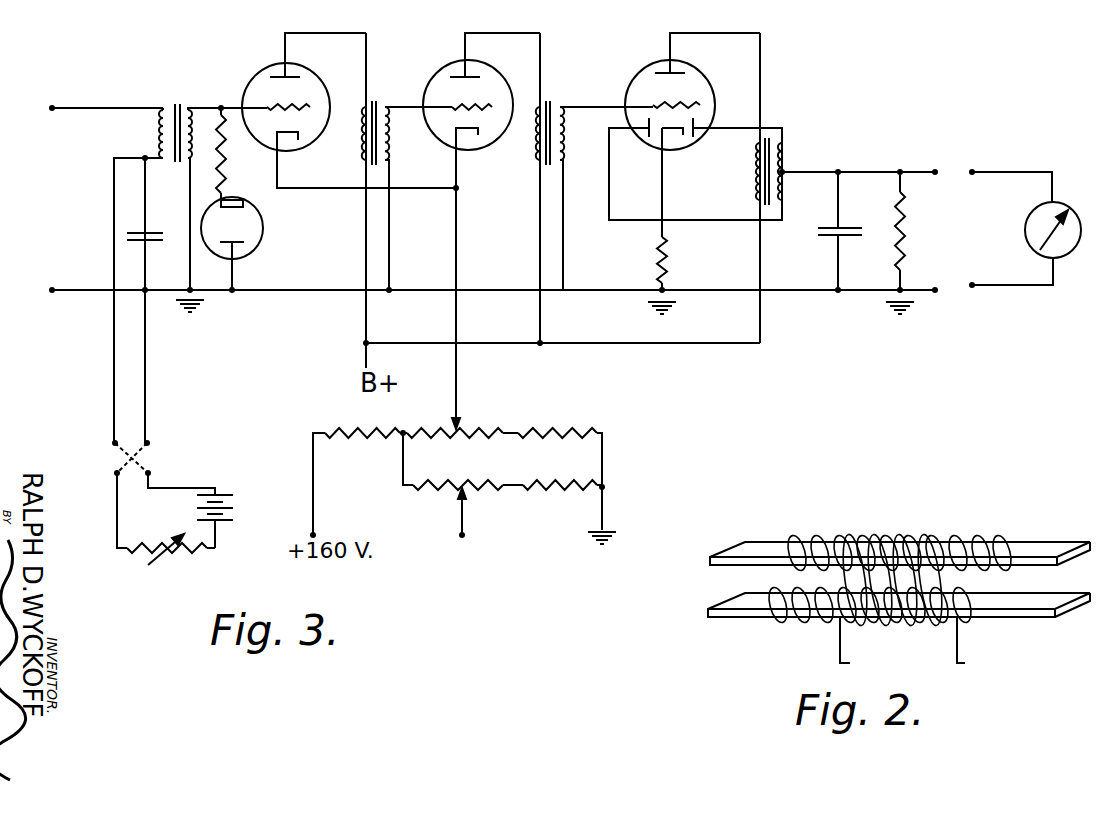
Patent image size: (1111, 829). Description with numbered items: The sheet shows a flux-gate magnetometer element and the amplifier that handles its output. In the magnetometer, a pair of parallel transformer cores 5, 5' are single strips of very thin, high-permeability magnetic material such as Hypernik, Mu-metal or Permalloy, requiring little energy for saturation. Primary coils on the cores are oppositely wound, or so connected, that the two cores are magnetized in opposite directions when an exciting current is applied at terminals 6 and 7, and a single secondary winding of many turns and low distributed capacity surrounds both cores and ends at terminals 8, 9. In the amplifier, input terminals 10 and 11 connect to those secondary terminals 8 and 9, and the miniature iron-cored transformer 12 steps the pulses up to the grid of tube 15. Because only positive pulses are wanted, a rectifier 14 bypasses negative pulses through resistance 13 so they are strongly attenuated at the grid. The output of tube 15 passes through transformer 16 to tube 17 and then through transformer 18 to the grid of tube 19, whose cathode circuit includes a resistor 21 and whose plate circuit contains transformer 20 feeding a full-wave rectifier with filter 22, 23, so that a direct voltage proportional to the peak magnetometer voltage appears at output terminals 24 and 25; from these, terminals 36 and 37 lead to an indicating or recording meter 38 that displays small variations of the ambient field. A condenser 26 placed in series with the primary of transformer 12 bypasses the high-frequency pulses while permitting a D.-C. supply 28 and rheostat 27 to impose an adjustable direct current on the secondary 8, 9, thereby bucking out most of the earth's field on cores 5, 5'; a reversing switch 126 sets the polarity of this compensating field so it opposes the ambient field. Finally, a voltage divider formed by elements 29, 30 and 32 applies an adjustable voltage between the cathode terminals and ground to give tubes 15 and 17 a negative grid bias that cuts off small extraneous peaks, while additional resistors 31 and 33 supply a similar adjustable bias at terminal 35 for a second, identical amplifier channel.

In FIG. 2, the transformer core 5 is at (900, 537).
In FIG. 2, the transformer core 5' is at (899, 619).
In FIG. 2, the primary terminal 6 is at (797, 557).
In FIG. 2, the primary terminal 7 is at (767, 617).
In FIG. 2, the secondary terminal 8 is at (868, 606).
In FIG. 2, the secondary terminal 9 is at (934, 606).
In FIG. 3, the input terminal 10 is at (89, 109).
In FIG. 3, the input terminal 11 is at (476, 299).
In FIG. 3, the input transformer 12 is at (177, 105).
In FIG. 3, the resistance 13 is at (228, 145).
In FIG. 3, the rectifier 14 is at (262, 237).
In FIG. 3, the tube 15 is at (313, 145).
In FIG. 3, the transformer 16 is at (374, 106).
In FIG. 3, the tube 17 is at (492, 143).
In FIG. 3, the transformer 18 is at (548, 106).
In FIG. 3, the tube 19 is at (700, 138).
In FIG. 3, the transformer 20 is at (768, 133).
In FIG. 3, the cathode resistor 21 is at (672, 265).
In FIG. 3, the filter 22 is at (820, 232).
In FIG. 3, the filter 23 is at (905, 230).
In FIG. 3, the output terminal 24 is at (942, 162).
In FIG. 3, the output terminal 25 is at (942, 280).
In FIG. 3, the condenser 26 is at (162, 236).
In FIG. 3, the rheostat 27 is at (172, 567).
In FIG. 3, the D.-C. supply 28 is at (235, 500).
In FIG. 3, the voltage divider element 29 is at (372, 440).
In FIG. 3, the voltage divider element 30 is at (476, 440).
In FIG. 3, the resistor 31 is at (443, 491).
In FIG. 3, the voltage divider element 32 is at (552, 440).
In FIG. 3, the resistor 33 is at (557, 491).
In FIG. 3, the terminal 35 is at (479, 526).
In FIG. 3, the meter terminal 36 is at (974, 176).
In FIG. 3, the meter terminal 37 is at (974, 289).
In FIG. 3, the meter 38 is at (1068, 258).
In FIG. 3, the reversing switch 126 is at (138, 458).